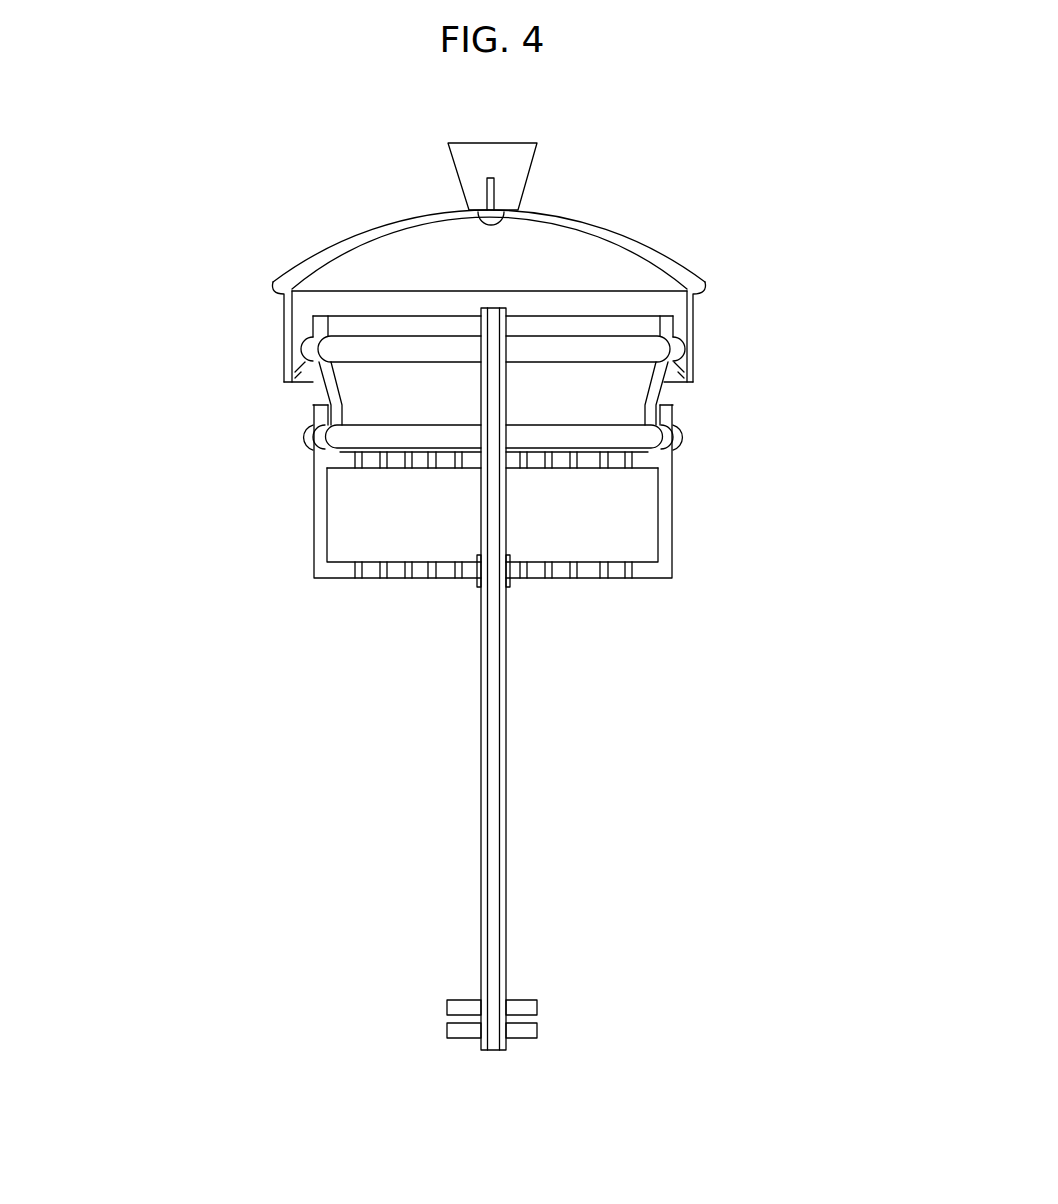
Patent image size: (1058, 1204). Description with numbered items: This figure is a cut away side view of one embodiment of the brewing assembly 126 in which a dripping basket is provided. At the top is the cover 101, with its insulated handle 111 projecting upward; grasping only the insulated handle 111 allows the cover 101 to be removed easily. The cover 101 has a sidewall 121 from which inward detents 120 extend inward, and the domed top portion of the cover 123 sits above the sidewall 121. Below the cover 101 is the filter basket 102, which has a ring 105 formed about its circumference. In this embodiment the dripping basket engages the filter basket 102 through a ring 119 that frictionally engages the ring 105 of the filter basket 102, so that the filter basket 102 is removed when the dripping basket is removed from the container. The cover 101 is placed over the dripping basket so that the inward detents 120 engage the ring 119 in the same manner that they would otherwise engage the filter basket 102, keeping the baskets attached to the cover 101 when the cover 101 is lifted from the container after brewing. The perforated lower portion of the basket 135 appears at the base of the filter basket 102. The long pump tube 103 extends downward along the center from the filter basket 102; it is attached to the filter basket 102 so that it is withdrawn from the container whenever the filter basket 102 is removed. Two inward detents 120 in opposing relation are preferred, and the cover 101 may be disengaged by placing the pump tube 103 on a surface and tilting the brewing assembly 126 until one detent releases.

The cover 101 is at (444, 257).
The filter basket 102 is at (583, 539).
The pump tube 103 is at (570, 679).
The ring 105 is at (384, 457).
The insulated handle 111 is at (580, 150).
The ring 119 is at (387, 477).
The inward detents 120 is at (581, 386).
The sidewall 121 is at (602, 312).
The dome cover 123 is at (577, 226).
The brewing assembly 126 is at (357, 334).
The slotted band 135 is at (404, 607).